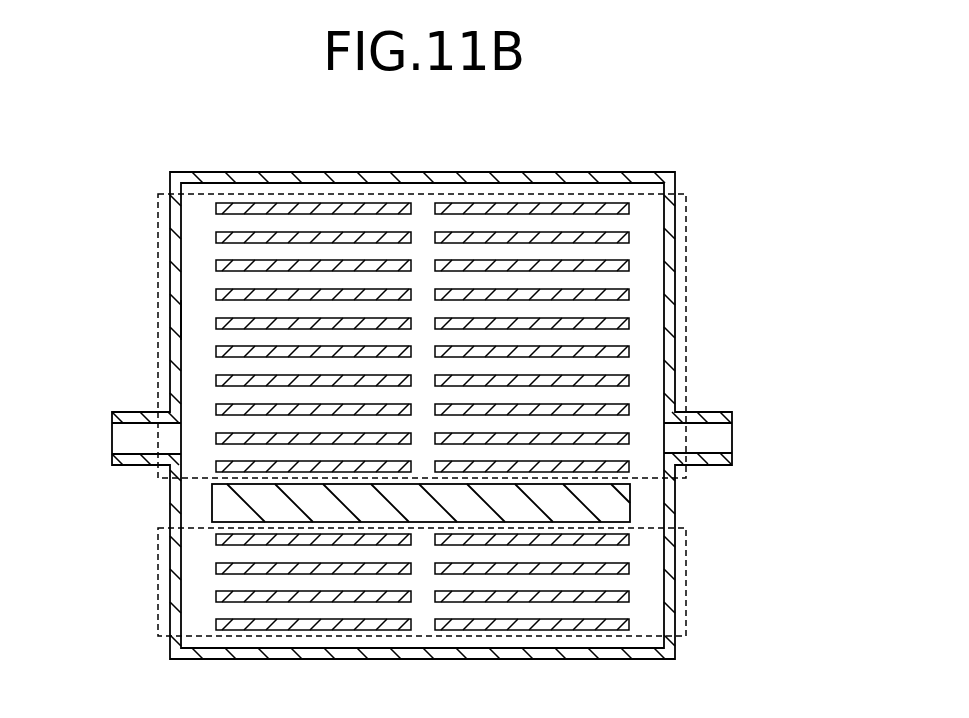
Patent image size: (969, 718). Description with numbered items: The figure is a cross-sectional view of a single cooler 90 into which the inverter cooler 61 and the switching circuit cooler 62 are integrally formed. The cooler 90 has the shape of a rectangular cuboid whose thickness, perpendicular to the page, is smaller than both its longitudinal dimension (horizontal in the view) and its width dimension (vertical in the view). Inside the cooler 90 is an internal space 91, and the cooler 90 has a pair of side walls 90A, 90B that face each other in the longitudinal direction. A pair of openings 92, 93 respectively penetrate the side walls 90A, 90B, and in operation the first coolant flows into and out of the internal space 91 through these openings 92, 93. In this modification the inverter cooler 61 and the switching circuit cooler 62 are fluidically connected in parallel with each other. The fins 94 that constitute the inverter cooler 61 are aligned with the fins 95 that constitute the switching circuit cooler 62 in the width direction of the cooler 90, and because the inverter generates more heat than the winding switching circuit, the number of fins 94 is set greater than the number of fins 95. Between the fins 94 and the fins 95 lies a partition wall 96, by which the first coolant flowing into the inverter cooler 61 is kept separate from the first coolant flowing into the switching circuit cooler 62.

The cooler 90 is at (697, 152).
The side wall 90A is at (170, 207).
The side wall 90B is at (676, 223).
The internal space 91 is at (183, 327).
The opening 92 is at (146, 464).
The opening 93 is at (707, 410).
The fins 94 is at (375, 200).
The fins 95 is at (365, 636).
The partition wall 96 is at (612, 507).
The inverter cooler 61 is at (690, 266).
The switching circuit cooler 62 is at (687, 570).